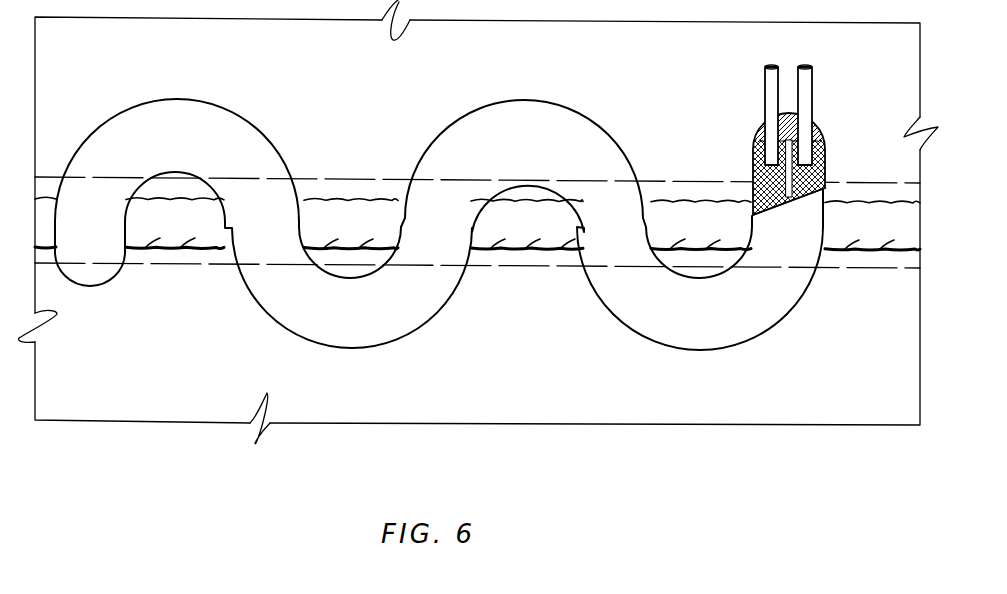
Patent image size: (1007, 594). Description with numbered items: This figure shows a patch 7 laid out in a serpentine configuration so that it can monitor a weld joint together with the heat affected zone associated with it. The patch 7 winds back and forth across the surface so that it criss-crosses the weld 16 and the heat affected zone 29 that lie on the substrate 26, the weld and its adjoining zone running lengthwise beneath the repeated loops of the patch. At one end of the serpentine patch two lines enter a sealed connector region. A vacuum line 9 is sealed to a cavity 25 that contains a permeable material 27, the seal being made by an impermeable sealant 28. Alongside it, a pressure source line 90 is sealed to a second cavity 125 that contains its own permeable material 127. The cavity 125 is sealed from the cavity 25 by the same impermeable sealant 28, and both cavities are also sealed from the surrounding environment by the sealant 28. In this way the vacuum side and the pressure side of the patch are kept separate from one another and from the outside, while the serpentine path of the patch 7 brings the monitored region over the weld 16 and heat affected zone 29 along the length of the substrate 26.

The patch 7 is at (611, 312).
The vacuum line 9 is at (771, 110).
The pressure source line 90 is at (803, 107).
The impermeable sealant 28 is at (758, 132).
The cavity 25 is at (757, 150).
The permeable material 27 is at (756, 180).
The cavity 125 is at (826, 160).
The permeable material 127 is at (812, 184).
The weld 16 is at (895, 240).
The heat affected zone 29 is at (547, 266).
The substrate 26 is at (466, 408).